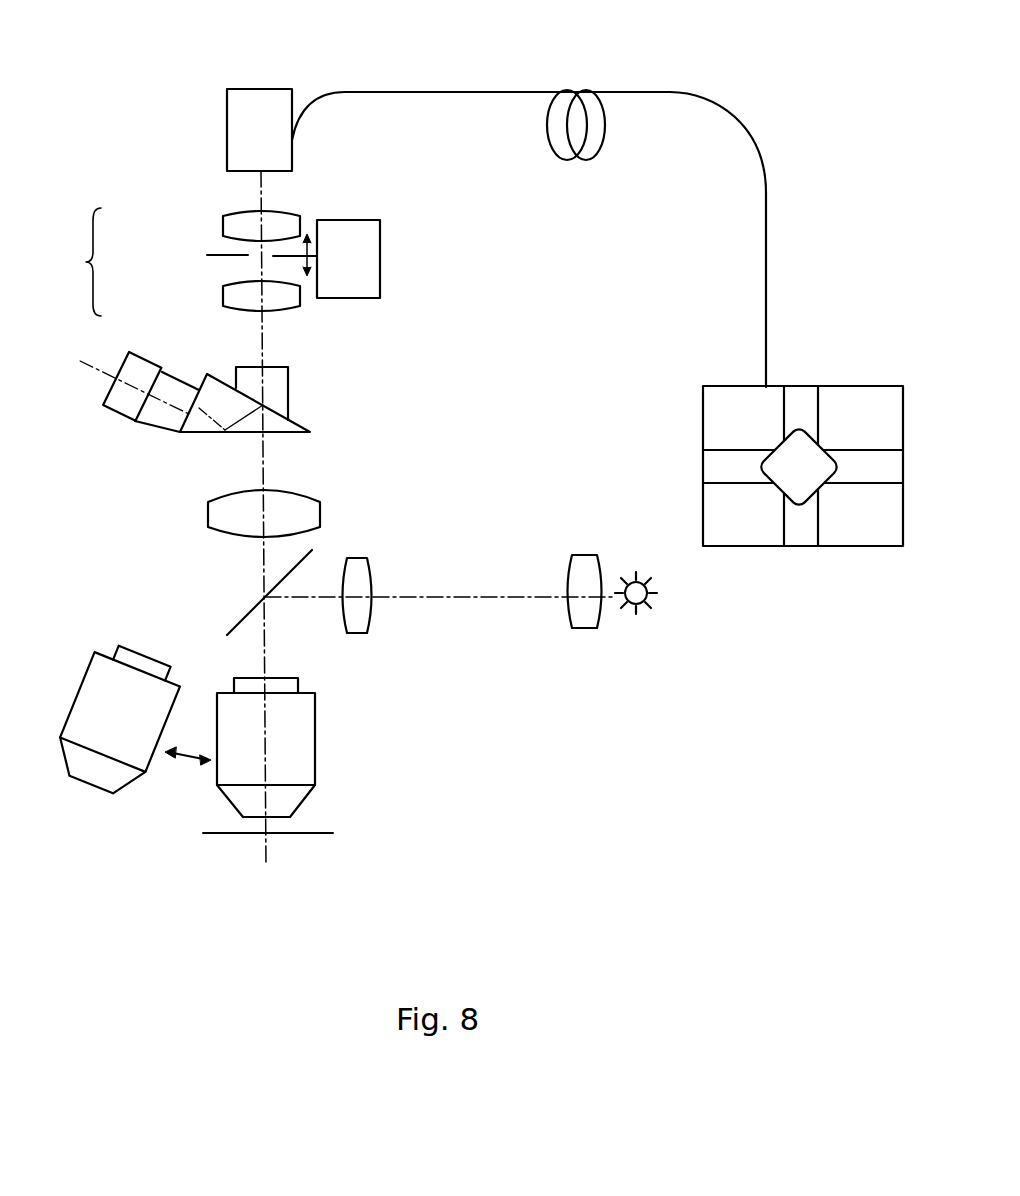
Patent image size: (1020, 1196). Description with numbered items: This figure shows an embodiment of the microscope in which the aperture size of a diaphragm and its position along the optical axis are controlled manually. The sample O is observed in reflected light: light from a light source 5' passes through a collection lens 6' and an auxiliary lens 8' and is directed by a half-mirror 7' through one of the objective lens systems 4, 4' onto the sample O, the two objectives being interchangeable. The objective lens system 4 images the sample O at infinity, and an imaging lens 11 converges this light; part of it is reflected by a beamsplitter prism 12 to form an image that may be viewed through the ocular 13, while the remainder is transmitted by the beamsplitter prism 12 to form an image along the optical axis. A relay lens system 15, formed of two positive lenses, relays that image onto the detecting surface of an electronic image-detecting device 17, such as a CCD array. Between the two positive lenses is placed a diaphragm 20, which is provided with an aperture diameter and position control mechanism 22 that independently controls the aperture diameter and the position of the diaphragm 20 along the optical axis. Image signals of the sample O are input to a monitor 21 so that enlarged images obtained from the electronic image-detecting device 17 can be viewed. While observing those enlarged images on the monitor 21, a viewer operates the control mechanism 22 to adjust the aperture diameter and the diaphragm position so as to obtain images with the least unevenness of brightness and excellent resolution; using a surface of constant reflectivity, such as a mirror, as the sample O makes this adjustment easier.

The electronic image-detecting device 17 is at (261, 102).
The monitor 21 is at (873, 538).
The relay lens system 15 is at (175, 265).
The diaphragm 20 is at (207, 258).
The aperture diameter and position control mechanism 22 is at (380, 258).
The ocular 13 is at (125, 407).
The beamsplitter prism 12 is at (207, 432).
The imaging lens 11 is at (310, 505).
The half-mirror 7' is at (252, 592).
The auxiliary lens 8' is at (357, 566).
The collection lens 6' is at (585, 563).
The light source 5' is at (636, 561).
The objective lens system 4 is at (296, 747).
The objective lens system 4' is at (113, 719).
The sample O is at (266, 838).